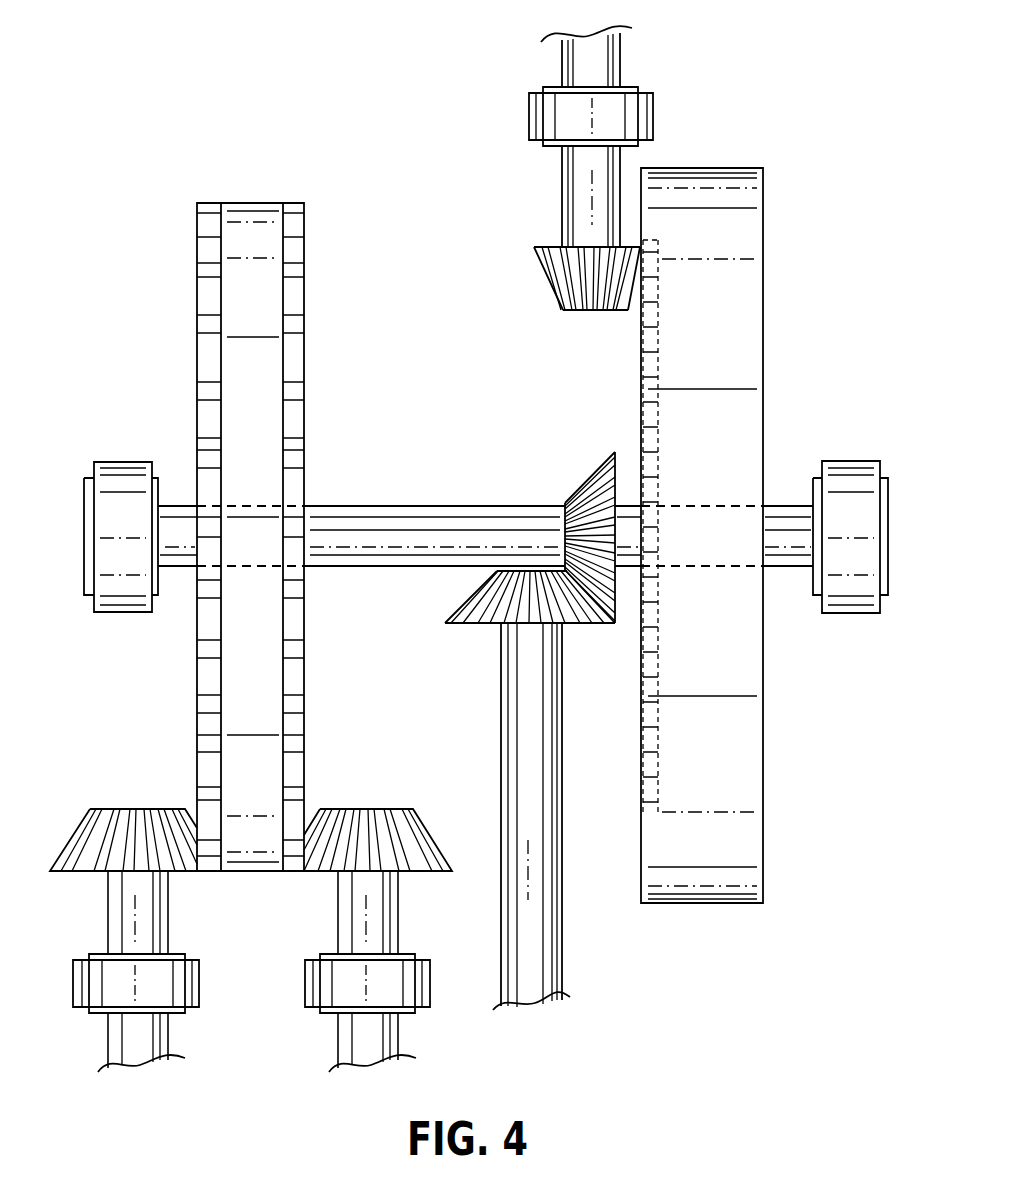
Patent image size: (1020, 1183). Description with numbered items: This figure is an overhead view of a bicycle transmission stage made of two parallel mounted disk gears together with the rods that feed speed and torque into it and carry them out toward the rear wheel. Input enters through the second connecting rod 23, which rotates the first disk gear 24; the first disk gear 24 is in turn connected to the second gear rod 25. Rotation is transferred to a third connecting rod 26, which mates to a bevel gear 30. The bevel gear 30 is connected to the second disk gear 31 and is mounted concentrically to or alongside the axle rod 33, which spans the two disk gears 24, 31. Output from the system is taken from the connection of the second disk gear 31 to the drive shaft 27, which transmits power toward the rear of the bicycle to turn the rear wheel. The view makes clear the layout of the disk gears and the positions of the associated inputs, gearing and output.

The second connecting rod 23 is at (75, 816).
The first disk gear 24 is at (237, 308).
The second gear rod 25 is at (426, 816).
The third connecting rod 26 is at (490, 712).
The drive shaft 27 is at (535, 215).
The bevel gear 30 is at (590, 487).
The second disk gear 31 is at (748, 301).
The axle rod 33 is at (422, 523).